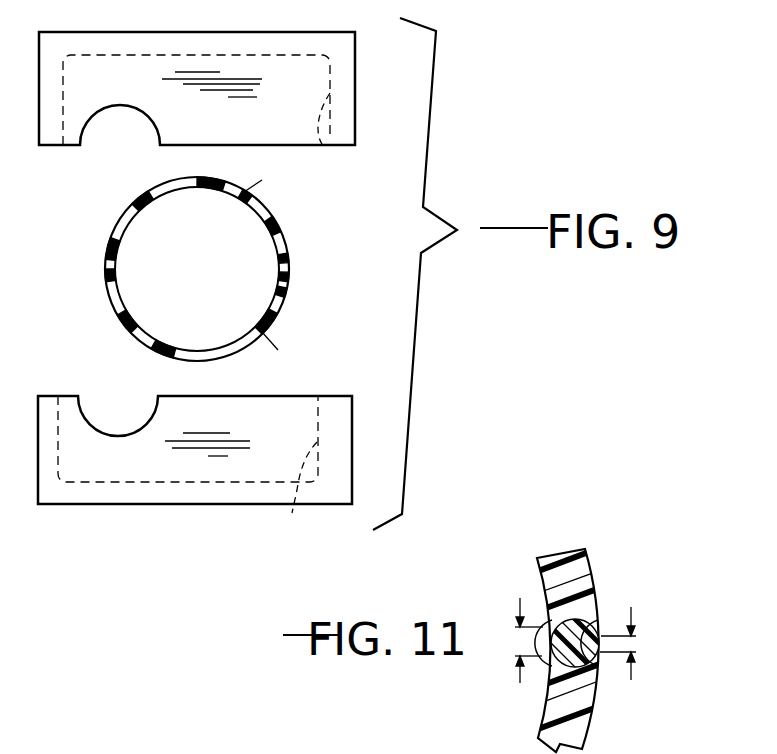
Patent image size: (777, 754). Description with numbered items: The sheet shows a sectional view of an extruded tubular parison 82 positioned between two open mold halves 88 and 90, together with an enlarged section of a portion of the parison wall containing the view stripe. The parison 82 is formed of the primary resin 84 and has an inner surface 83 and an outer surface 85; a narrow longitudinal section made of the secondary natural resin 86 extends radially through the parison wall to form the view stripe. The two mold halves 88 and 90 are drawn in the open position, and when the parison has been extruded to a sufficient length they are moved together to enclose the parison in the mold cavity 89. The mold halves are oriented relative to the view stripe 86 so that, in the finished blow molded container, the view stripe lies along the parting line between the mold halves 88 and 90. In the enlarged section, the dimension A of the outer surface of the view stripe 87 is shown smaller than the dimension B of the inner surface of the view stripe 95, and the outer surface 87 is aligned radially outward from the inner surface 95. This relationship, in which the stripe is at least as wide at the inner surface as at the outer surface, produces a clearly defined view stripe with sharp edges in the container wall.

In FIG. 9, the tubular parison 82 is at (255, 269).
In FIG. 9, the inner surface 83 is at (267, 220).
In FIG. 9, the primary resin 84 is at (276, 311).
In FIG. 11, the primary resin 84 is at (590, 578).
In FIG. 9, the outer surface 85 is at (257, 197).
In FIG. 9, the secondary natural resin 86 is at (287, 262).
In FIG. 11, the secondary natural resin 86 is at (597, 668).
In FIG. 11, the outer surface of the view stripe 87 is at (600, 637).
In FIG. 9, the mold half 88 is at (37, 122).
In FIG. 9, the mold cavity 89 is at (322, 144).
In FIG. 9, the mold half 90 is at (38, 478).
In FIG. 11, the inner surface of the view stripe 95 is at (550, 642).